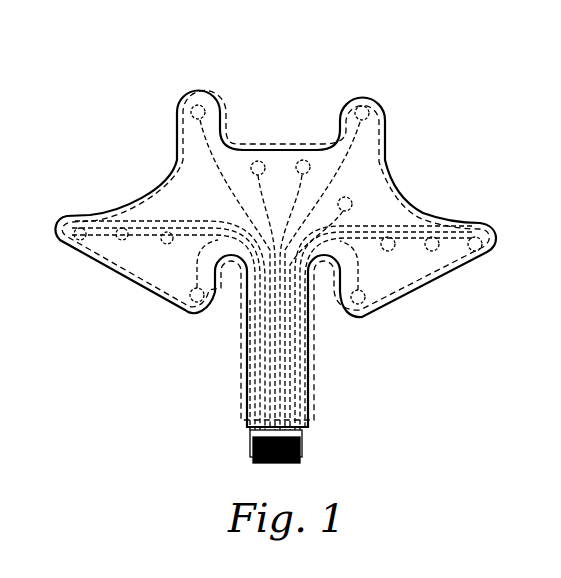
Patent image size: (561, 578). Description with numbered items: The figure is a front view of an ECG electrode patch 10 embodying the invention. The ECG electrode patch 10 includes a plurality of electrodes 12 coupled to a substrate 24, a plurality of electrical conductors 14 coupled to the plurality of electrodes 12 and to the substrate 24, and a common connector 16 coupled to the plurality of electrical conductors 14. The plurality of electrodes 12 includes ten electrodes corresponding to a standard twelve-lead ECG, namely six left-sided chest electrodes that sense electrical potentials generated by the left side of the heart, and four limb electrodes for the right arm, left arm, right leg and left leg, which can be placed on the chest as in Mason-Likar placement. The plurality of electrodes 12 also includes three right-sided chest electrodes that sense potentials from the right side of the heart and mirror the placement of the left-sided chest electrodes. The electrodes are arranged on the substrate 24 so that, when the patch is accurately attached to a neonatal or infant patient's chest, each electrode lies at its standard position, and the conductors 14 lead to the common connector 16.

The ECG electrode patch 10 is at (423, 147).
The electrodes 12 is at (275, 155).
The electrical conductors 14 is at (302, 389).
The common connector 16 is at (303, 448).
The substrate 24 is at (415, 277).